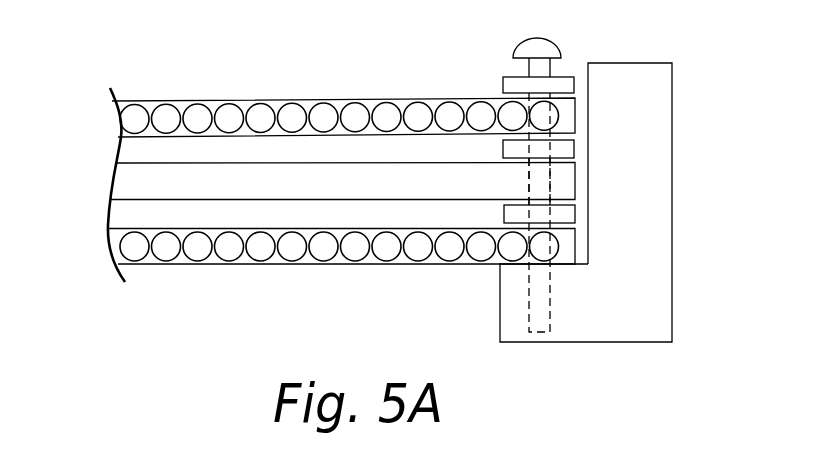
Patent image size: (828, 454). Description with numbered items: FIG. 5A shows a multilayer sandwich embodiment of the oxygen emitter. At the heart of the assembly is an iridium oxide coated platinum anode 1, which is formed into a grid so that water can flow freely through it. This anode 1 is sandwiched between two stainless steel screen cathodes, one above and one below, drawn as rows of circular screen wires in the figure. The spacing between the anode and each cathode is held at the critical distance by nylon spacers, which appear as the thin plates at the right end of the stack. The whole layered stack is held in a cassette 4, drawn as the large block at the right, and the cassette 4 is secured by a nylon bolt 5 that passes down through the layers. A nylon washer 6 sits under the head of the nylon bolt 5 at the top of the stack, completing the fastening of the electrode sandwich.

The anode 1 is at (114, 182).
The cassette 4 is at (666, 288).
The nylon bolt 5 is at (526, 48).
The nylon washer 6 is at (560, 80).